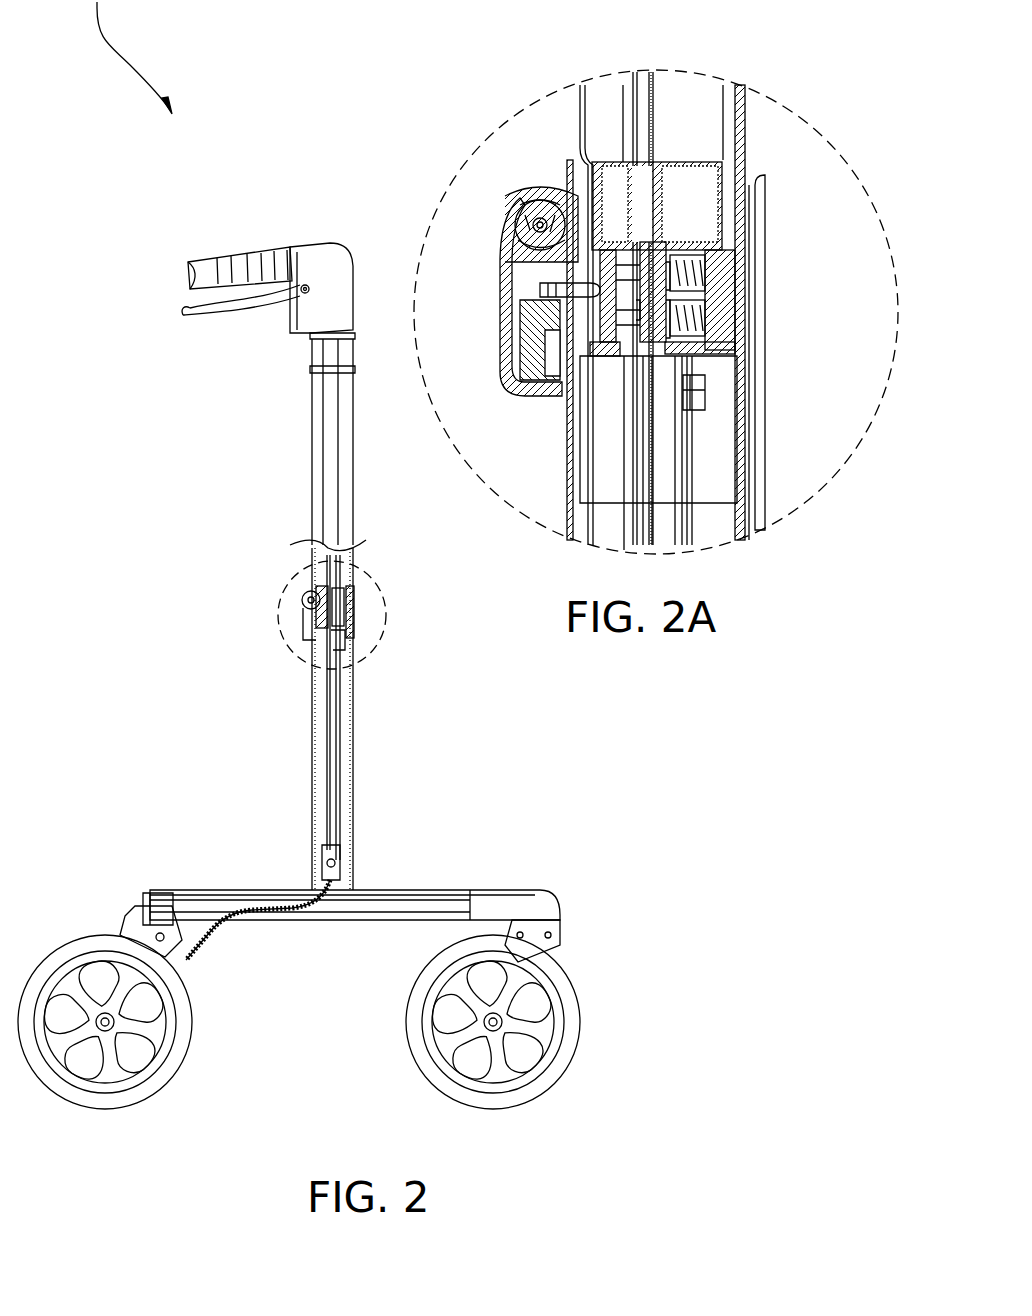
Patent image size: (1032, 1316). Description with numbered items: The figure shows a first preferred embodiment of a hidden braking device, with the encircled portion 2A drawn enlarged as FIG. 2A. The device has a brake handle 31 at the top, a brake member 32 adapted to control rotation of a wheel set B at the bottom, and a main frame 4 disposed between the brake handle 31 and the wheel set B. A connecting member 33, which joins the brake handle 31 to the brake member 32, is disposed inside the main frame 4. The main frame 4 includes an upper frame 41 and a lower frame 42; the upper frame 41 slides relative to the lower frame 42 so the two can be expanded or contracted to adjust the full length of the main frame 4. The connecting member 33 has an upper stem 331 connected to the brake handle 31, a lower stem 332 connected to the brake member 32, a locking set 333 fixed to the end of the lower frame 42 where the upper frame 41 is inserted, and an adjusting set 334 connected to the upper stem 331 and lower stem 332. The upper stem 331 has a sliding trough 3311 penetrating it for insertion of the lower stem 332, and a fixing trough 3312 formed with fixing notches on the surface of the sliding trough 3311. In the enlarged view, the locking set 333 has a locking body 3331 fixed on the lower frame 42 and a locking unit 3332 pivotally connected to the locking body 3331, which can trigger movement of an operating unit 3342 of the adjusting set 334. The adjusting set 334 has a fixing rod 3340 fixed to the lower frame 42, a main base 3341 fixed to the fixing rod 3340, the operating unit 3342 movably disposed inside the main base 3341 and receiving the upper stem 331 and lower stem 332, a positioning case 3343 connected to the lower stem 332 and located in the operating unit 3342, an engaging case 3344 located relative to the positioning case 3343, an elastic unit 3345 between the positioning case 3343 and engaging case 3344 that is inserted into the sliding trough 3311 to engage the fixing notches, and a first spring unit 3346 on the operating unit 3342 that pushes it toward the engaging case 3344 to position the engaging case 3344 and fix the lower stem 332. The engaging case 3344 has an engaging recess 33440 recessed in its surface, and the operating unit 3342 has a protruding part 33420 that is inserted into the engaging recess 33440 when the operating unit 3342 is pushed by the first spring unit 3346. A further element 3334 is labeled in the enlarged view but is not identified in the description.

In FIG. 2, the encircled portion 2A is at (285, 594).
In FIG. 2, the main frame 4 is at (319, 415).
In FIG. 2, the brake handle 31 is at (185, 313).
In FIG. 2, the brake member 32 is at (196, 940).
In FIG. 2, the connecting member 33 is at (358, 612).
In FIG. 2, the upper frame 41 is at (318, 441).
In FIG. 2, the lower frame 42 is at (312, 721).
In FIG. 2, the wheel set B is at (55, 958).
In FIG. 2A, the upper stem 331 is at (656, 118).
In FIG. 2, the lower stem 332 is at (332, 776).
In FIG. 2A, the lower stem 332 is at (646, 528).
In FIG. 2A, the locking set 333 is at (500, 228).
In FIG. 2A, the adjusting set 334 is at (700, 358).
In FIG. 2A, the sliding trough 3311 is at (640, 107).
In FIG. 2A, the fixing trough 3312 is at (656, 95).
In FIG. 2A, the locking body 3331 is at (762, 196).
In FIG. 2A, the locking unit 3332 is at (508, 248).
In FIG. 2A, the housing block 3334 is at (657, 206).
In FIG. 2, the fixing rod 3340 is at (338, 836).
In FIG. 2A, the fixing rod 3340 is at (692, 520).
In FIG. 2A, the main base 3341 is at (718, 354).
In FIG. 2A, the operating unit 3342 is at (710, 286).
In FIG. 2A, the positioning case 3343 is at (620, 288).
In FIG. 2A, the engaging case 3344 is at (694, 245).
In FIG. 2A, the elastic unit 3345 is at (662, 294).
In FIG. 2A, the first spring unit 3346 is at (706, 322).
In FIG. 2A, the protruding part 33420 is at (726, 348).
In FIG. 2A, the engaging recess 33440 is at (690, 275).